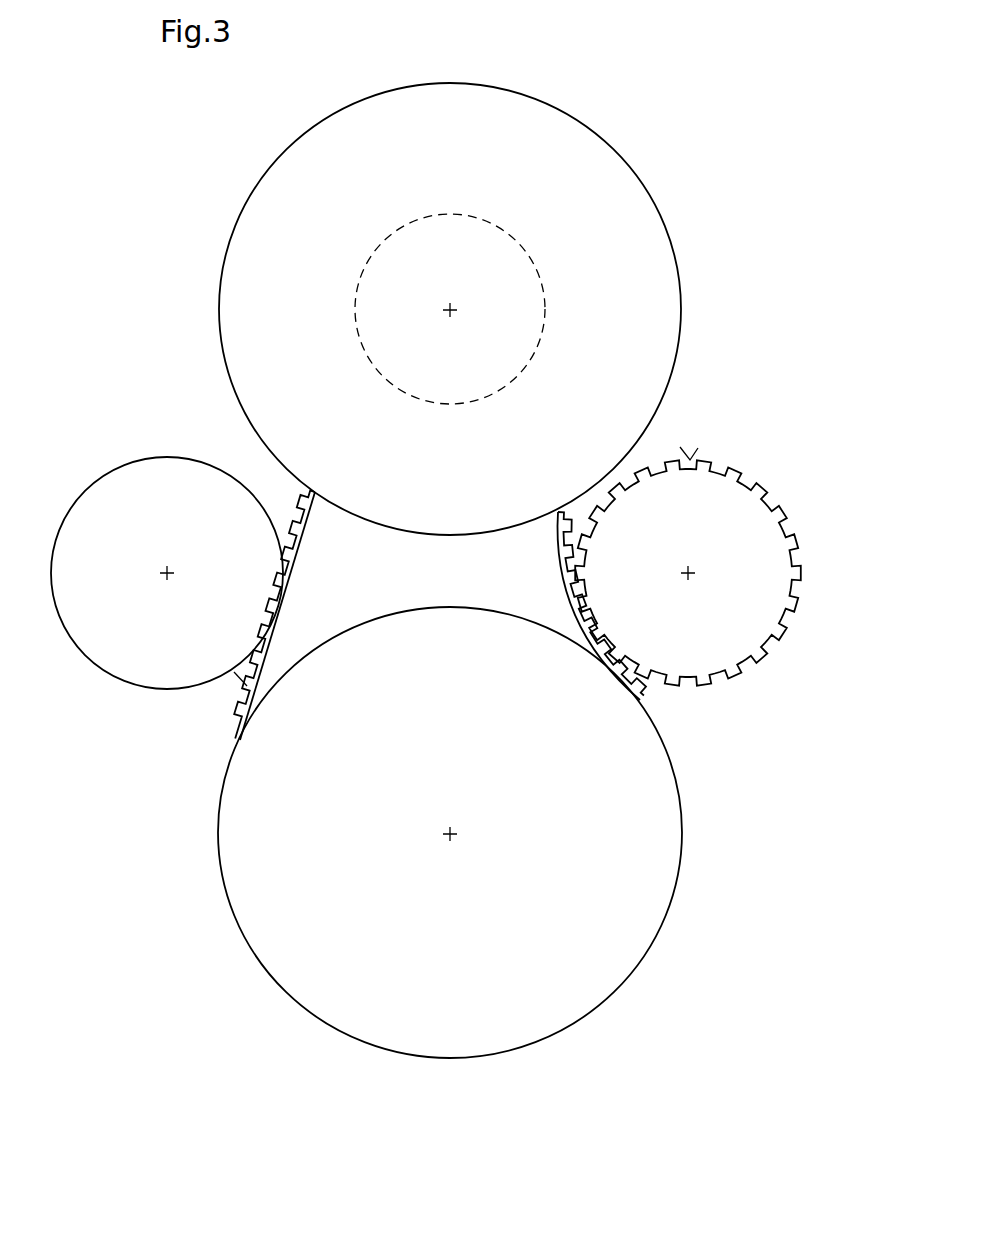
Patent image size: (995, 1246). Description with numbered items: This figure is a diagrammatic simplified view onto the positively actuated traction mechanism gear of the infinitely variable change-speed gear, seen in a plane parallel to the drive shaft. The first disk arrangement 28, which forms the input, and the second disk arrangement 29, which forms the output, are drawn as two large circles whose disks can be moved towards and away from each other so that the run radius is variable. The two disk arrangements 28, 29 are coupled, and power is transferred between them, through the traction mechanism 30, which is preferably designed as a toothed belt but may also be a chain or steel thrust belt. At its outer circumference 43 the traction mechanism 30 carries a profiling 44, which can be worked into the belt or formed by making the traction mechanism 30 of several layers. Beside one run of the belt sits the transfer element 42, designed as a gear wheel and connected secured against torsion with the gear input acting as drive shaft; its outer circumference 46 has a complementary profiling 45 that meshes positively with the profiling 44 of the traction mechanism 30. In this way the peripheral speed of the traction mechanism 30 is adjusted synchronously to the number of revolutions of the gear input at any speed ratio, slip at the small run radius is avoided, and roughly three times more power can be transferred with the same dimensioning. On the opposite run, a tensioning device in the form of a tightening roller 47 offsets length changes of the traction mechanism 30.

The first disk arrangement 28 is at (625, 812).
The second disk arrangement 29 is at (650, 325).
The traction mechanism 30 is at (285, 553).
The transfer element 42 is at (732, 508).
The outer circumference 43 is at (237, 683).
The profiling 44 is at (257, 652).
The complementary profiling 45 is at (727, 467).
The outer circumference 46 is at (690, 460).
The tightening roller 47 is at (132, 482).